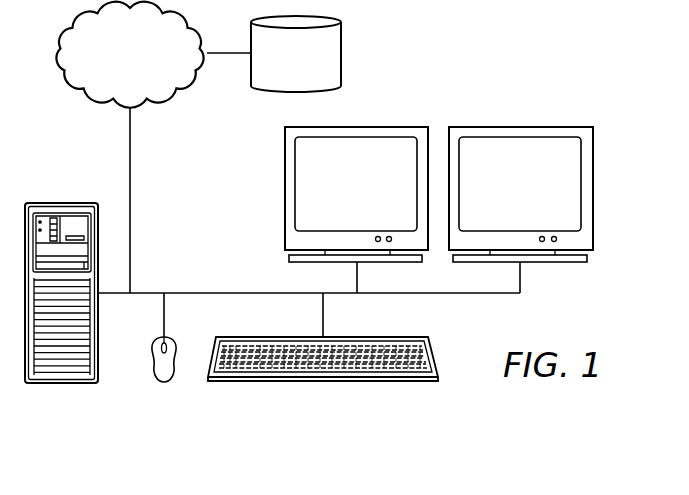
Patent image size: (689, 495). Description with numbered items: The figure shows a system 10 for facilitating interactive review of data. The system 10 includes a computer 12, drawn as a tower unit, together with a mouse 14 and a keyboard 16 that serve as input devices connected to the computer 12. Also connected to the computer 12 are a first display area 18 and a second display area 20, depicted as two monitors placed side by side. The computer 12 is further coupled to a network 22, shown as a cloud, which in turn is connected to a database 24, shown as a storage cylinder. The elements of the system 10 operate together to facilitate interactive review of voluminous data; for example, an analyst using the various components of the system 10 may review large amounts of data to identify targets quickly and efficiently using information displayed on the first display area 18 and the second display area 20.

The system 10 is at (487, 59).
The computer 12 is at (60, 383).
The mouse 14 is at (162, 382).
The keyboard 16 is at (355, 381).
The first display area 18 is at (344, 199).
The second display area 20 is at (507, 199).
The network 22 is at (117, 67).
The database 24 is at (283, 69).